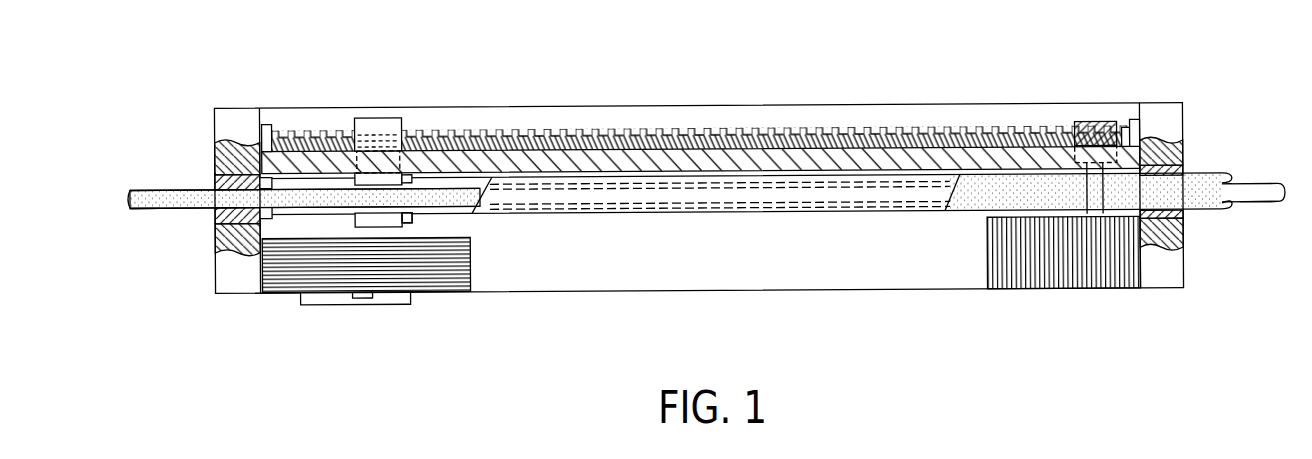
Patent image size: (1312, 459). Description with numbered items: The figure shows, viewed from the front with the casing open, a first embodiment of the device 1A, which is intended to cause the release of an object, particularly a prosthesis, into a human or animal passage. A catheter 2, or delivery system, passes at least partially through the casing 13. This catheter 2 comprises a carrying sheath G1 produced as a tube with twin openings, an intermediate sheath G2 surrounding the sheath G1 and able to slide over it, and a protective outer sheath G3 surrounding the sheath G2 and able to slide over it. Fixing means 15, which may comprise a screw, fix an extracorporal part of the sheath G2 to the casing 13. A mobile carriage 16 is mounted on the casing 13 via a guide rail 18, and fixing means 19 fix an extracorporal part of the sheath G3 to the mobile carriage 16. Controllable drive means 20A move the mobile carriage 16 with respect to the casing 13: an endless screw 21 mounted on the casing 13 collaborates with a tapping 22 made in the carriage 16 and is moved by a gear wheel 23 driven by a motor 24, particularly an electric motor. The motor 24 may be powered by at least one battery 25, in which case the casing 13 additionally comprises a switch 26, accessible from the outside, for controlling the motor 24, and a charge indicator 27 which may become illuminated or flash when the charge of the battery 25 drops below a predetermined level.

The device 1A is at (222, 99).
The catheter 2 is at (1203, 172).
The casing 13 is at (1168, 106).
The fixing means 15 is at (270, 219).
The mobile carriage 16 is at (370, 116).
The guide rail 18 is at (510, 157).
The fixing means 19 is at (422, 220).
The drive means 20A is at (948, 265).
The endless screw 21 is at (805, 131).
The tapping 22 is at (385, 126).
The gear wheel 23 is at (1088, 125).
The motor 24 is at (1065, 291).
The battery 25 is at (445, 292).
The switch 26 is at (318, 303).
The charge indicator 27 is at (372, 296).
The carrying sheath G1 is at (160, 207).
The intermediate sheath G2 is at (1245, 181).
The protective outer sheath G3 is at (1208, 213).